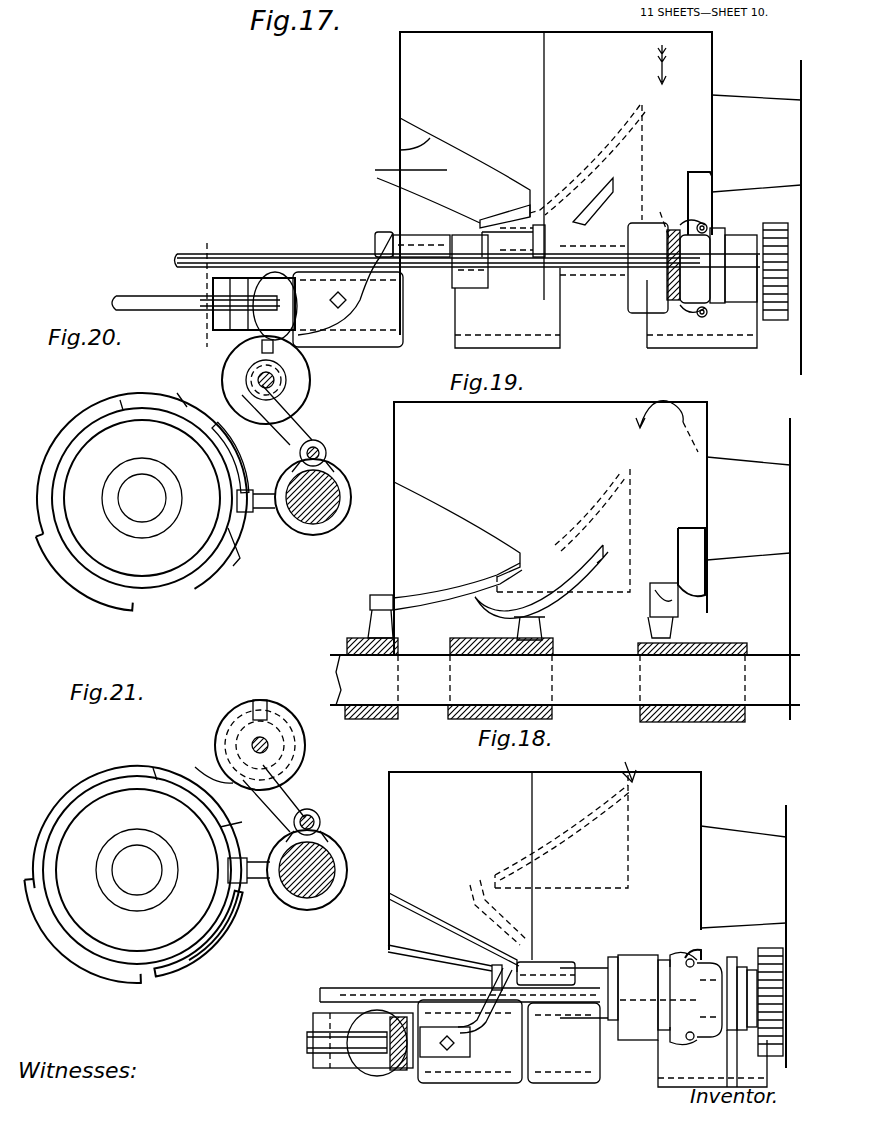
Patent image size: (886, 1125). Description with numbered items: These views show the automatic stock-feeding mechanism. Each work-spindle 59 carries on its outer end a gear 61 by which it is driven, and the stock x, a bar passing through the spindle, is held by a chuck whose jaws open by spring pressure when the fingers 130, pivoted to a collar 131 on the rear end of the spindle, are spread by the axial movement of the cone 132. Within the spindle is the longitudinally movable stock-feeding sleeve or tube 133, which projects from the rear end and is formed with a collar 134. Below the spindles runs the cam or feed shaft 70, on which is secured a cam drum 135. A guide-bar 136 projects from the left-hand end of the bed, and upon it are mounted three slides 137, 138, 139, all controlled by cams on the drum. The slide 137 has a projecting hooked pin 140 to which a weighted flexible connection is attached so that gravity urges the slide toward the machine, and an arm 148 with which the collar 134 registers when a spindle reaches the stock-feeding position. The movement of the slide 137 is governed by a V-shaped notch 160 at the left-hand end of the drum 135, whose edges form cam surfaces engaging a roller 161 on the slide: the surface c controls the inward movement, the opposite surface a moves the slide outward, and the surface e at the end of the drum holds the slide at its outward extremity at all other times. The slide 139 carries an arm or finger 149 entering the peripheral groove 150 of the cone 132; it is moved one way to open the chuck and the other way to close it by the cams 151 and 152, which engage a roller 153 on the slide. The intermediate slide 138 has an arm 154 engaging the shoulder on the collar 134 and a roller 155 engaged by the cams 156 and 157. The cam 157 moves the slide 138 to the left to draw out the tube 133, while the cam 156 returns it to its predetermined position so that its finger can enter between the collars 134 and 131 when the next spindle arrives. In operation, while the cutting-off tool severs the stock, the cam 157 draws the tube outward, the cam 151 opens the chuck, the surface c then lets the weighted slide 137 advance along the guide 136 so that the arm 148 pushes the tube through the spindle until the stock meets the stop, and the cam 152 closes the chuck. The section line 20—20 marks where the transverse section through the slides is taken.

In FIG. 17, the section line 20 is at (206, 292).
In FIG. 17, the work-spindle 59 is at (742, 248).
In FIG. 18, the work-spindle 59 is at (742, 993).
In FIG. 17, the gear 61 is at (775, 223).
In FIG. 18, the gear 61 is at (762, 1048).
In FIG. 20, the cam or feed shaft 70 is at (137, 503).
In FIG. 21, the cam or feed shaft 70 is at (128, 880).
In FIG. 17, the fingers 130 is at (676, 228).
In FIG. 20, the fingers 130 is at (278, 345).
In FIG. 21, the fingers 130 is at (306, 777).
In FIG. 18, the fingers 130 is at (688, 1042).
In FIG. 17, the collar 131 is at (642, 224).
In FIG. 18, the collar 131 is at (640, 955).
In FIG. 17, the cone 132 is at (708, 303).
In FIG. 17, the stock-feeding sleeve or tube 133 is at (610, 270).
In FIG. 20, the stock-feeding sleeve or tube 133 is at (285, 372).
In FIG. 18, the stock-feeding sleeve or tube 133 is at (460, 982).
In FIG. 17, the collar 134 is at (470, 288).
In FIG. 20, the collar 134 is at (280, 380).
In FIG. 17, the cam drum 135 is at (526, 46).
In FIG. 19, the cam drum 135 is at (712, 452).
In FIG. 18, the cam drum 135 is at (700, 813).
In FIG. 17, the guide-bar 136 is at (603, 335).
In FIG. 20, the guide-bar 136 is at (313, 525).
In FIG. 19, the guide-bar 136 is at (418, 660).
In FIG. 21, the guide-bar 136 is at (306, 898).
In FIG. 18, the guide-bar 136 is at (408, 1072).
In FIG. 17, the slide 137 is at (395, 340).
In FIG. 20, the slide 137 is at (343, 514).
In FIG. 19, the slide 137 is at (370, 717).
In FIG. 21, the slide 137 is at (347, 876).
In FIG. 18, the slide 137 is at (495, 1075).
In FIG. 17, the intermediate slide 138 is at (550, 345).
In FIG. 19, the intermediate slide 138 is at (524, 656).
In FIG. 18, the intermediate slide 138 is at (575, 1075).
In FIG. 17, the slide 139 is at (680, 345).
In FIG. 19, the slide 139 is at (718, 657).
In FIG. 18, the slide 139 is at (660, 1080).
In FIG. 17, the hooked pin 140 is at (152, 306).
In FIG. 20, the hooked pin 140 is at (326, 452).
In FIG. 21, the hooked pin 140 is at (320, 818).
In FIG. 18, the hooked pin 140 is at (320, 1040).
In FIG. 17, the arm 148 is at (395, 236).
In FIG. 20, the arm 148 is at (230, 392).
In FIG. 17, the arm or finger 149 is at (718, 228).
In FIG. 20, the arm or finger 149 is at (252, 515).
In FIG. 19, the arm or finger 149 is at (368, 623).
In FIG. 21, the arm or finger 149 is at (258, 884).
In FIG. 18, the arm or finger 149 is at (493, 978).
In FIG. 18, the peripheral groove 150 is at (665, 960).
In FIG. 17, the cam 151 is at (650, 225).
In FIG. 19, the cam 151 is at (680, 600).
In FIG. 21, the cam 151 is at (236, 783).
In FIG. 17, the cam 152 is at (700, 173).
In FIG. 20, the cam 152 is at (178, 394).
In FIG. 19, the cam 152 is at (708, 543).
In FIG. 21, the cam 152 is at (222, 826).
In FIG. 18, the cam 152 is at (700, 950).
In FIG. 19, the roller 153 is at (675, 625).
In FIG. 18, the roller 153 is at (714, 1000).
In FIG. 18, the arm 154 is at (612, 957).
In FIG. 19, the roller 155 is at (545, 622).
In FIG. 18, the roller 155 is at (660, 1002).
In FIG. 17, the cam 156 is at (585, 210).
In FIG. 20, the cam 156 is at (240, 452).
In FIG. 19, the cam 156 is at (585, 565).
In FIG. 21, the cam 156 is at (205, 955).
In FIG. 18, the cam 156 is at (478, 880).
In FIG. 17, the cam 157 is at (630, 120).
In FIG. 20, the cam 157 is at (174, 604).
In FIG. 19, the cam 157 is at (625, 470).
In FIG. 21, the cam 157 is at (108, 975).
In FIG. 18, the cam 157 is at (630, 775).
In FIG. 17, the V-shaped notch 160 is at (375, 170).
In FIG. 19, the V-shaped notch 160 is at (441, 554).
In FIG. 17, the roller 161 is at (378, 234).
In FIG. 20, the roller 161 is at (248, 535).
In FIG. 19, the roller 161 is at (370, 602).
In FIG. 21, the roller 161 is at (222, 915).
In FIG. 18, the roller 161 is at (495, 965).
In FIG. 17, the cam surface a is at (400, 150).
In FIG. 20, the cam surface a is at (131, 410).
In FIG. 19, the cam surface a is at (442, 508).
In FIG. 21, the cam surface a is at (152, 778).
In FIG. 18, the cam surface a is at (418, 905).
In FIG. 17, the cam surface c is at (447, 197).
In FIG. 20, the cam surface c is at (238, 477).
In FIG. 19, the cam surface c is at (440, 596).
In FIG. 21, the cam surface c is at (220, 903).
In FIG. 18, the cam surface c is at (428, 950).
In FIG. 17, the surface e is at (398, 66).
In FIG. 20, the surface e is at (64, 562).
In FIG. 19, the surface e is at (394, 467).
In FIG. 21, the surface e is at (70, 958).
In FIG. 18, the surface e is at (389, 926).
In FIG. 20, the stock x is at (275, 385).
In FIG. 21, the stock x is at (250, 745).